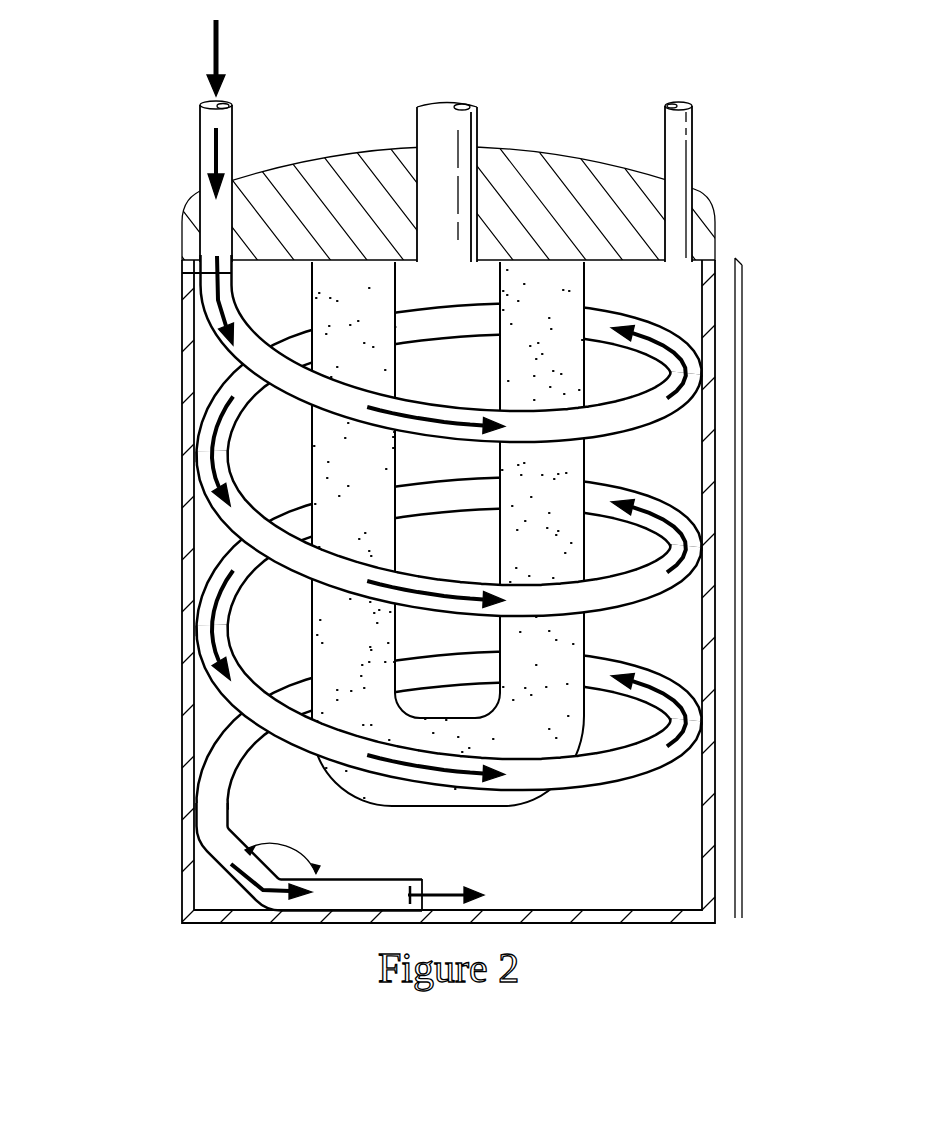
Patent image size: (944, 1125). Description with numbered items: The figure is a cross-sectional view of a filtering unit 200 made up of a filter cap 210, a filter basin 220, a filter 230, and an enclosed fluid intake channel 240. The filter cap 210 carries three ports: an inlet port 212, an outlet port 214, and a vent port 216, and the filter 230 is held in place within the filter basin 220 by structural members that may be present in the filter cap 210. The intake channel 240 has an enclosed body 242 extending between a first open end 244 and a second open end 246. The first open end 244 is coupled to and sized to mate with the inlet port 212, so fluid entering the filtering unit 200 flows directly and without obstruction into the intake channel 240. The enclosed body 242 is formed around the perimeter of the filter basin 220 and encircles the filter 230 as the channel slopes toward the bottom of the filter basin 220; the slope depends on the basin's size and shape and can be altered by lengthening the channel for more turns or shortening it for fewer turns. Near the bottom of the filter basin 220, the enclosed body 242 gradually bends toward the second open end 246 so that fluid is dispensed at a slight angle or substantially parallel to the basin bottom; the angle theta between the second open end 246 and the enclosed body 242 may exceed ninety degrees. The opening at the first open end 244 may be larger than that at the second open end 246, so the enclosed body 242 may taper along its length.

The filtering unit 200 is at (602, 64).
The filter cap 210 is at (548, 152).
The inlet port 212 is at (200, 154).
The outlet port 214 is at (417, 130).
The vent port 216 is at (692, 157).
The filter basin 220 is at (742, 590).
The filter 230 is at (680, 477).
The enclosed fluid intake channel 240 is at (394, 550).
The enclosed body 242 is at (225, 365).
The first open end 244 is at (198, 283).
The second open end 246 is at (451, 846).